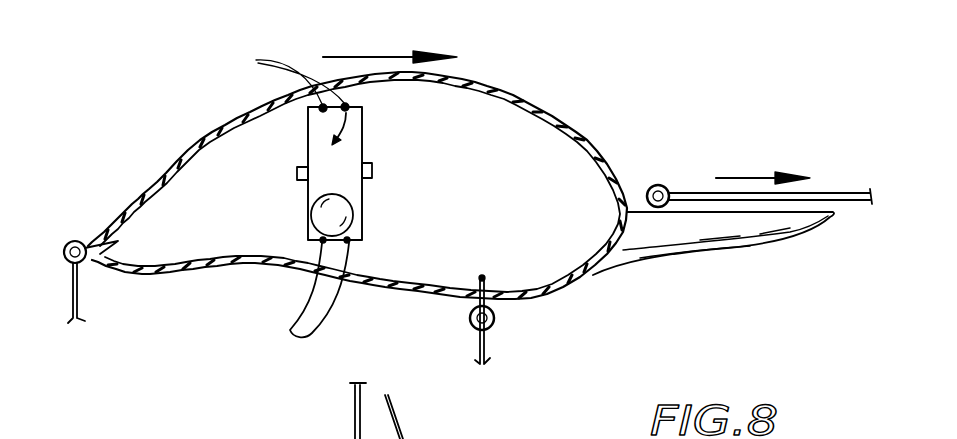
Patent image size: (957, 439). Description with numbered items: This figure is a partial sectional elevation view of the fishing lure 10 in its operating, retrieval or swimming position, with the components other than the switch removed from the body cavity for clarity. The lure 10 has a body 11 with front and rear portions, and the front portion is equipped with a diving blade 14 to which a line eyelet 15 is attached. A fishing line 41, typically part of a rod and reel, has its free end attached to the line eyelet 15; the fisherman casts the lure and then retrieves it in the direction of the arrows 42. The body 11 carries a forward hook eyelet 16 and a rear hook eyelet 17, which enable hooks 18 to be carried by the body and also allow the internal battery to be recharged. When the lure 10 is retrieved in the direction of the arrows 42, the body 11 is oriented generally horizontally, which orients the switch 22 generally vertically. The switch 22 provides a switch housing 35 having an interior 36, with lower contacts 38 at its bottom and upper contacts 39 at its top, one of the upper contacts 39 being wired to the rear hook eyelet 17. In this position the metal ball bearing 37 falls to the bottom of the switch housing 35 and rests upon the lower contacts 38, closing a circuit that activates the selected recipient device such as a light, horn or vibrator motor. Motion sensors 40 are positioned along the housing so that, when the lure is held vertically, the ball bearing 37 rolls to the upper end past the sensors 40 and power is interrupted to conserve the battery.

The fishing lure 10 is at (200, 101).
The body 11 is at (566, 118).
The diving blade 14 is at (740, 247).
The line eyelet 15 is at (660, 185).
The forward hook eyelet 16 is at (468, 317).
The rear hook eyelet 17 is at (75, 240).
The hooks 18 is at (70, 300).
The switch 22 is at (306, 137).
The switch housing 35 is at (362, 150).
The interior 36 is at (362, 112).
The metal ball bearing 37 is at (362, 192).
The lower contacts 38 is at (304, 330).
The upper contacts 39 is at (278, 82).
The motion sensors 40 is at (372, 172).
The fishing line 41 is at (825, 195).
The arrows 42 is at (370, 57).